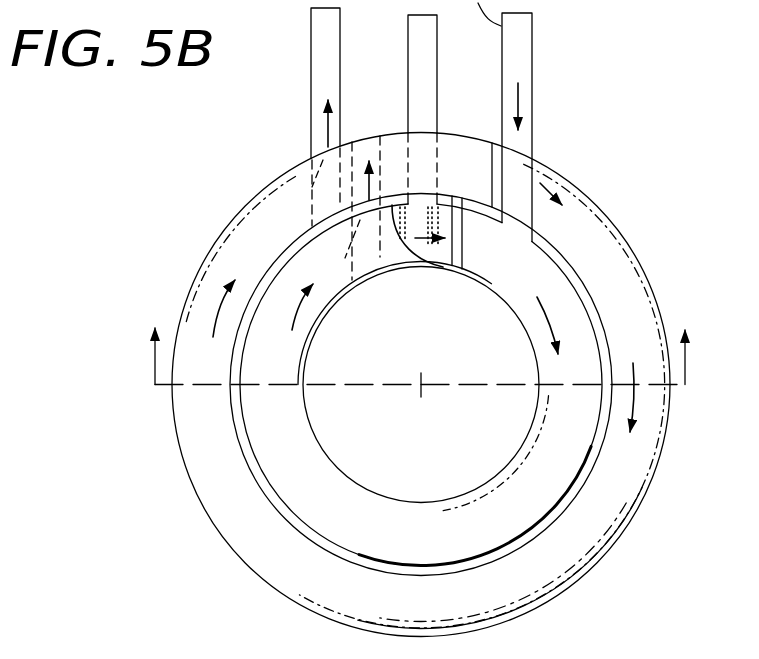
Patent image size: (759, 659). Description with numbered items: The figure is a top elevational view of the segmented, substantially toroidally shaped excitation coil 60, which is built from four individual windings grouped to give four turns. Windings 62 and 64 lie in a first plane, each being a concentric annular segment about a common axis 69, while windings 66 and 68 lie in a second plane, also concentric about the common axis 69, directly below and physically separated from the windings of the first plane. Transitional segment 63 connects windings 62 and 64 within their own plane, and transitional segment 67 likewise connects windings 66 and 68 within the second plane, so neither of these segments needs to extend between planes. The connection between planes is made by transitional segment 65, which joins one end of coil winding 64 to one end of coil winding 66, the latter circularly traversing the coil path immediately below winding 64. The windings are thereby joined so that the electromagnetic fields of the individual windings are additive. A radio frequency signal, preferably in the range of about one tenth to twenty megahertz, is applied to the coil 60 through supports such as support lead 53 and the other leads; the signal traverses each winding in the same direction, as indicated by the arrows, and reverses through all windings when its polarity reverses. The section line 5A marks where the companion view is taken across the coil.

The support lead 53 is at (407, 88).
The excitation coil 60 is at (198, 232).
The coil winding 62 is at (627, 240).
The transitional segment 63 is at (472, 196).
The coil winding 64 is at (535, 323).
The transitional segment 65 is at (440, 267).
The coil winding 66 is at (456, 262).
The transitional segment 67 is at (310, 232).
The coil winding 68 is at (502, 145).
The common axis 69 is at (415, 389).
The section line VA-VA 5A is at (422, 339).